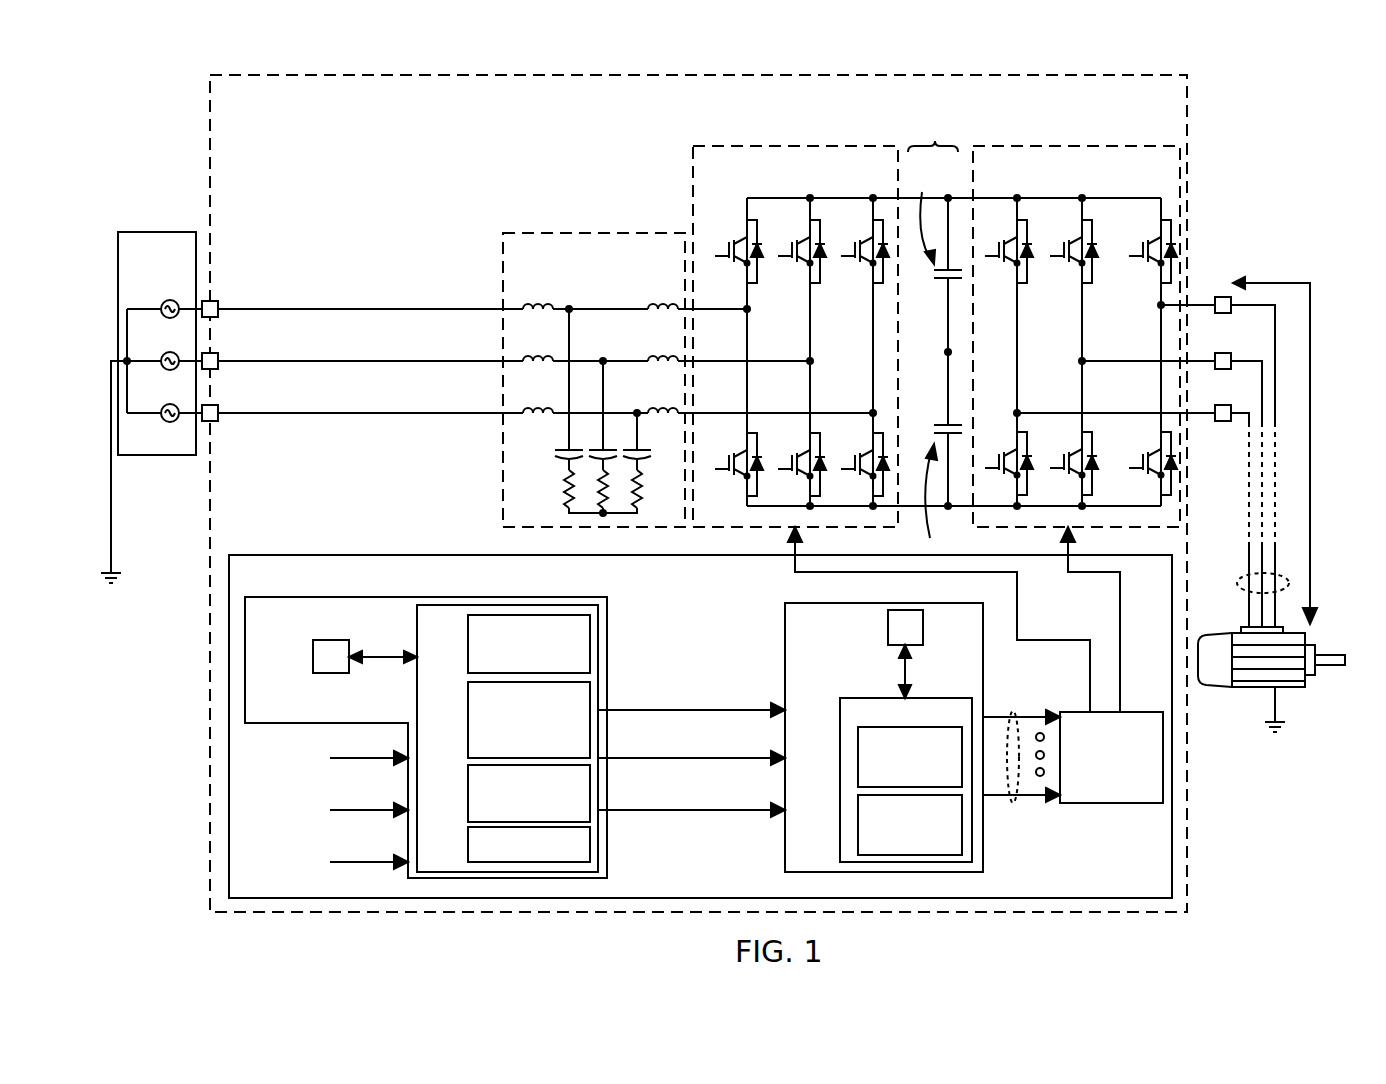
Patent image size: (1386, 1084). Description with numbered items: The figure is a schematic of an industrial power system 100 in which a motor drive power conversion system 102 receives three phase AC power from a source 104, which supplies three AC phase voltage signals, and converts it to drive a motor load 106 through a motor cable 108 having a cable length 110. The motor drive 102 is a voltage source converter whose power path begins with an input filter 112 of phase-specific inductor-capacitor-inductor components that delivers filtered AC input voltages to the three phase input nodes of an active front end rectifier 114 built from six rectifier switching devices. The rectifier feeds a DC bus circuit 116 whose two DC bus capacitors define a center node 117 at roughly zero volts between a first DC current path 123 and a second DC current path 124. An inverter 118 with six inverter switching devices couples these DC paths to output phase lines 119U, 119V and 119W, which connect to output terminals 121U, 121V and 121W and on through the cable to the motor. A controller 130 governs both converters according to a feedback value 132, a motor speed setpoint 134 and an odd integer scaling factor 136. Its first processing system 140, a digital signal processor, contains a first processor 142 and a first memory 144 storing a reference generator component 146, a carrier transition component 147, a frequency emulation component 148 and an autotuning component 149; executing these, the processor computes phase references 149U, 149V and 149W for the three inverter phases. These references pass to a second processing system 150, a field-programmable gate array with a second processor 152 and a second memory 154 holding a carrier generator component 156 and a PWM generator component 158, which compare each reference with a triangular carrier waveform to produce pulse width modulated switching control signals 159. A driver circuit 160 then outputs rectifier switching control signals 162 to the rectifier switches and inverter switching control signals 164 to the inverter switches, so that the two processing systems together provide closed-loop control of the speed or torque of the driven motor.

The industrial power system 100 is at (174, 68).
The motor drive power conversion system 102 is at (638, 75).
The source 104 is at (150, 232).
The motor load 106 is at (1300, 690).
The motor cable 108 is at (1287, 578).
The cable length 110 is at (1310, 283).
The input filter 112 is at (612, 233).
The rectifier 114 is at (742, 146).
The DC bus circuit 116 is at (935, 140).
The center node 117 is at (948, 335).
The inverter 118 is at (1085, 146).
The output phase line U 119U is at (1158, 309).
The output phase line V 119V is at (1150, 362).
The output phase line W 119W is at (1161, 432).
The output terminal U 121U is at (1232, 306).
The output terminal V 121V is at (1232, 357).
The output terminal W 121W is at (1232, 410).
The first DC current path 123 is at (895, 198).
The second DC current path 124 is at (915, 507).
The controller 130 is at (298, 555).
The feedback value 132 is at (372, 757).
The motor speed setpoint 134 is at (372, 809).
The odd integer scaling factor 136 is at (372, 861).
The first processing system 140 is at (245, 612).
The first processor 142 is at (313, 657).
The first memory 144 is at (417, 620).
The reference generator component 146 is at (468, 652).
The carrier transition component 147 is at (468, 724).
The frequency emulation component 148 is at (468, 790).
The autotuning component 149 is at (468, 844).
The phase reference REFU 149U is at (760, 710).
The phase reference REFV 149V is at (760, 758).
The phase reference REFW 149W is at (760, 810).
The second processing system 150 is at (785, 650).
The second processor 152 is at (888, 622).
The second memory 154 is at (862, 698).
The carrier generator component 156 is at (858, 757).
The PWM generator component 158 is at (858, 826).
The pulse width modulated switching control signals 159 is at (1015, 712).
The driver circuit 160 is at (1076, 712).
The rectifier switching control signals 162 is at (795, 572).
The inverter switching control signals 164 is at (1120, 640).